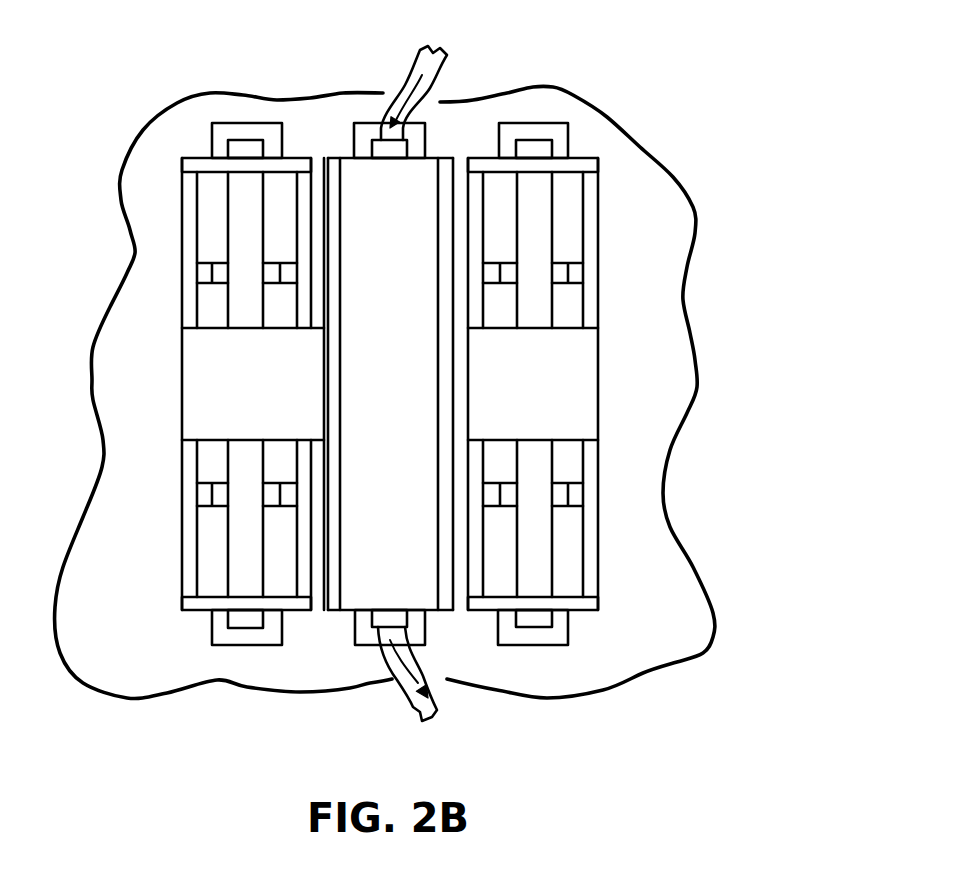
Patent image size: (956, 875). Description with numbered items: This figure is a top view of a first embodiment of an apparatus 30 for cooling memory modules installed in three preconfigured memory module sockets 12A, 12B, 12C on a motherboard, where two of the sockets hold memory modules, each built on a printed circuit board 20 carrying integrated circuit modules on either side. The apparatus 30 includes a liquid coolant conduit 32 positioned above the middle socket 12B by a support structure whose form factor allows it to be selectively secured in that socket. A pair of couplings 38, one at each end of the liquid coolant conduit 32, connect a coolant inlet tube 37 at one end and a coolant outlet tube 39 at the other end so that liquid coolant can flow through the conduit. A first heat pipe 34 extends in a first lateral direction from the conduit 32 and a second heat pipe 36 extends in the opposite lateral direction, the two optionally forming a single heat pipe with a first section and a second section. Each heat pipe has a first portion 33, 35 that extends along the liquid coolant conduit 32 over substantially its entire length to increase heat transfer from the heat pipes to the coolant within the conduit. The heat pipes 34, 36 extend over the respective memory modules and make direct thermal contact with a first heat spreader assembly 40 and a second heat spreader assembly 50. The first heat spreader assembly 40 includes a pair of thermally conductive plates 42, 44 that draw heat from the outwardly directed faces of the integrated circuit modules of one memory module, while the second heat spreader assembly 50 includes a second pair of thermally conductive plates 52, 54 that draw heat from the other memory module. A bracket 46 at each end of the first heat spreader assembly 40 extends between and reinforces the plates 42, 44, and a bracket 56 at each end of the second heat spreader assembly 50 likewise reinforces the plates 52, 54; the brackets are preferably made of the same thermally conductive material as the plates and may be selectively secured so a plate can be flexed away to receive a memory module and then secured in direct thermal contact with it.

The apparatus for cooling the memory modules 30 is at (560, 75).
The printed circuit board 20 is at (540, 152).
The coolant inlet tube 37 is at (406, 80).
The coupling 38 is at (393, 147).
The coolant outlet tube 39 is at (413, 705).
The first heat spreader assembly 40 is at (165, 173).
The thermally conductive plate 42 is at (178, 268).
The thermally conductive plate 44 is at (312, 188).
The bracket 46 is at (198, 158).
The second heat spreader assembly 50 is at (630, 240).
The thermally conductive plate 52 is at (600, 273).
The thermally conductive plate 54 is at (467, 193).
The bracket 56 is at (587, 163).
The liquid coolant conduit 32 is at (390, 384).
The first portion of the first heat pipe 33 is at (328, 228).
The first portion of the second heat pipe 35 is at (445, 293).
The first heat pipe 34 is at (267, 397).
The second heat pipe 36 is at (541, 397).
The memory module socket 12A is at (238, 647).
The memory module socket 12B is at (368, 647).
The memory module socket 12C is at (533, 647).